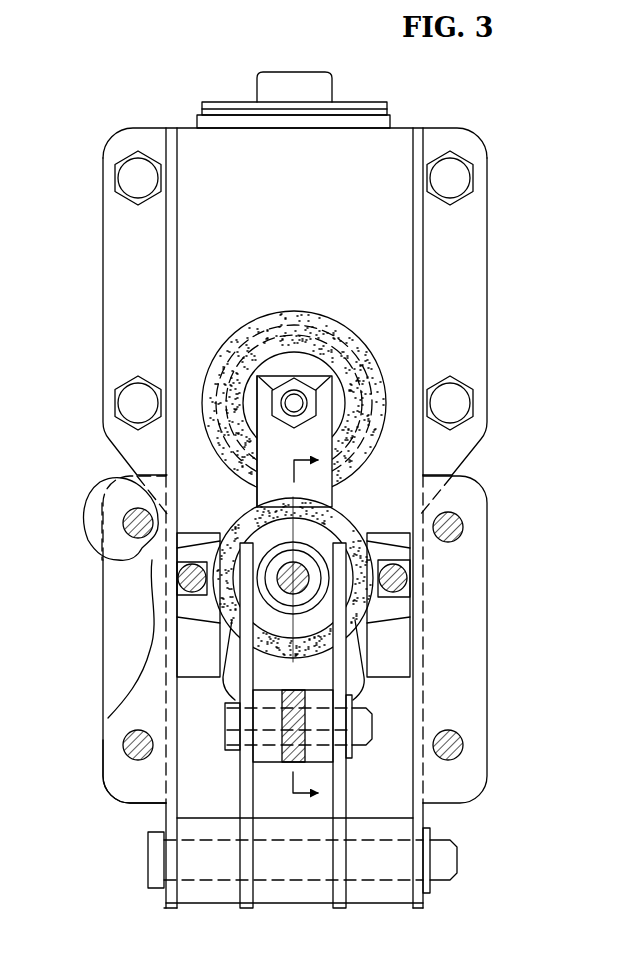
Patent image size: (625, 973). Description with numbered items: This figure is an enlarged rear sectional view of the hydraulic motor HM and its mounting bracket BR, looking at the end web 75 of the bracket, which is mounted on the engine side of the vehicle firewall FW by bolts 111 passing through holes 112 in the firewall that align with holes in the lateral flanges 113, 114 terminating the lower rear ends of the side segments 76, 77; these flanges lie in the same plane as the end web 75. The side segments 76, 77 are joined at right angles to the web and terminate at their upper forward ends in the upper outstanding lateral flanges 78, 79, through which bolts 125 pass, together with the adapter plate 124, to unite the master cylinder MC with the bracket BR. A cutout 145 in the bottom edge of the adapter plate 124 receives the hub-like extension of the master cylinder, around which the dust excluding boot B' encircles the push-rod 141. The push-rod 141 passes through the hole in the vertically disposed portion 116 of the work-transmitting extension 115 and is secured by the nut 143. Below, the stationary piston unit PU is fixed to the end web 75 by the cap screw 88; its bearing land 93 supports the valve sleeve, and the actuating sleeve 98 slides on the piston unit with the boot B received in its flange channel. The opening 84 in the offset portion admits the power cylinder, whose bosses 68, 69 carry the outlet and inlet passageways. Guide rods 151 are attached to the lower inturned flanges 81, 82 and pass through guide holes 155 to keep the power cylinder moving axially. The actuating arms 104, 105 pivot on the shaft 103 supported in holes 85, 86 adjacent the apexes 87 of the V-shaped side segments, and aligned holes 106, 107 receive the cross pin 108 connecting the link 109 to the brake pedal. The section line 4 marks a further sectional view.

The adapter plate 124 is at (388, 142).
The bolts 125 is at (130, 177).
The upper outstanding lateral flange 78 is at (116, 243).
The upper outstanding lateral flange 79 is at (470, 237).
The side segment 76 is at (169, 248).
The side segment 77 is at (415, 251).
The cutout 145 is at (292, 316).
The vertically disposed portion 116 is at (308, 382).
The push-rod 141 is at (284, 400).
The nut 143 is at (329, 380).
The extension 115 is at (254, 460).
The bearing land 93 is at (282, 527).
The actuating sleeve 98 is at (272, 546).
The bolts 111 is at (124, 527).
The holes 112 is at (147, 549).
The guide rod 151 is at (178, 590).
The guide holes 155 is at (402, 582).
The end web 75 is at (114, 662).
The lateral flange 114 is at (476, 631).
The lateral flange 113 is at (114, 780).
The opening 84 is at (222, 642).
The boss 69 is at (366, 677).
The boss 68 is at (223, 678).
The cap screw 88 is at (285, 595).
The lower inturned flange 81 is at (183, 680).
The lower inturned flange 82 is at (376, 672).
The cross pin 108 is at (226, 718).
The hole 106 is at (226, 739).
The link 109 is at (279, 762).
The hole 107 is at (325, 761).
The actuating arm 105 is at (348, 787).
The actuating arm 104 is at (243, 794).
The hole 85 is at (147, 843).
The hole 86 is at (445, 843).
The shaft 103 is at (148, 872).
The apexes 87 is at (167, 908).
The master cylinder MC is at (192, 122).
The flexible dust excluding boot B' is at (288, 390).
The flexible dust excluding boot B is at (283, 563).
The hydraulic motor HM is at (341, 513).
The piston unit PU is at (306, 608).
The mounting bracket BR is at (122, 474).
The firewall FW is at (86, 507).
The section line 4 is at (294, 630).